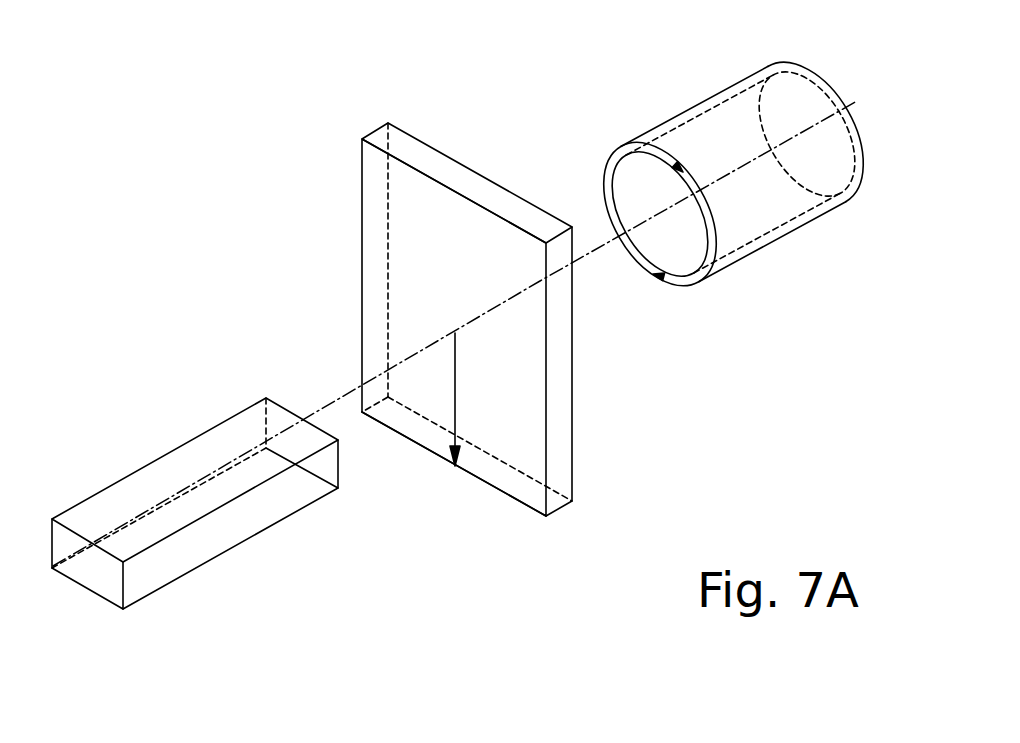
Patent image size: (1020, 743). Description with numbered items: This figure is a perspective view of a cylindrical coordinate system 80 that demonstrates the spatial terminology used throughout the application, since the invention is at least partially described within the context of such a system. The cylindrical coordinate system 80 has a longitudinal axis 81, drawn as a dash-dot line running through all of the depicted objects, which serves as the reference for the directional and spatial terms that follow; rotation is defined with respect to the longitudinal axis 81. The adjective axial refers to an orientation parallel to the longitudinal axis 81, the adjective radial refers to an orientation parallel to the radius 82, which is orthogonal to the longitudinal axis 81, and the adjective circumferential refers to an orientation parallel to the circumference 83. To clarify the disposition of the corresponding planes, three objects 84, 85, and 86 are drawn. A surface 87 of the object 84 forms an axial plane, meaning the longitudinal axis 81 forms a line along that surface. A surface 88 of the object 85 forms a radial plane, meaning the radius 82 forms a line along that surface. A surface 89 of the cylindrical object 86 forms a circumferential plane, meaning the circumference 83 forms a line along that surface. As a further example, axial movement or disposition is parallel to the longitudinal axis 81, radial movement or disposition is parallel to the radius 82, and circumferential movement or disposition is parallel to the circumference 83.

The cylindrical coordinate system 80 is at (308, 178).
The longitudinal axis 81 is at (847, 105).
The radius 82 is at (455, 390).
The circumference 83 is at (604, 173).
The object 84 is at (153, 595).
The object 85 is at (582, 505).
The object 86 is at (762, 250).
The surface 87 is at (147, 483).
The surface 88 is at (377, 273).
The surface 89 is at (692, 107).